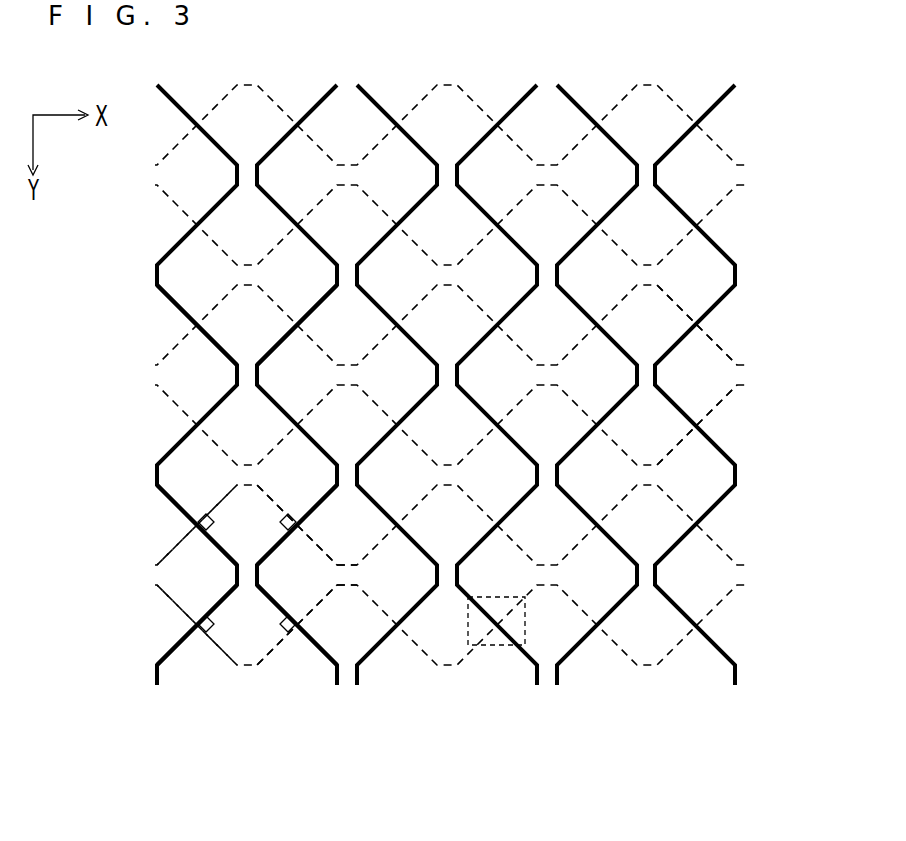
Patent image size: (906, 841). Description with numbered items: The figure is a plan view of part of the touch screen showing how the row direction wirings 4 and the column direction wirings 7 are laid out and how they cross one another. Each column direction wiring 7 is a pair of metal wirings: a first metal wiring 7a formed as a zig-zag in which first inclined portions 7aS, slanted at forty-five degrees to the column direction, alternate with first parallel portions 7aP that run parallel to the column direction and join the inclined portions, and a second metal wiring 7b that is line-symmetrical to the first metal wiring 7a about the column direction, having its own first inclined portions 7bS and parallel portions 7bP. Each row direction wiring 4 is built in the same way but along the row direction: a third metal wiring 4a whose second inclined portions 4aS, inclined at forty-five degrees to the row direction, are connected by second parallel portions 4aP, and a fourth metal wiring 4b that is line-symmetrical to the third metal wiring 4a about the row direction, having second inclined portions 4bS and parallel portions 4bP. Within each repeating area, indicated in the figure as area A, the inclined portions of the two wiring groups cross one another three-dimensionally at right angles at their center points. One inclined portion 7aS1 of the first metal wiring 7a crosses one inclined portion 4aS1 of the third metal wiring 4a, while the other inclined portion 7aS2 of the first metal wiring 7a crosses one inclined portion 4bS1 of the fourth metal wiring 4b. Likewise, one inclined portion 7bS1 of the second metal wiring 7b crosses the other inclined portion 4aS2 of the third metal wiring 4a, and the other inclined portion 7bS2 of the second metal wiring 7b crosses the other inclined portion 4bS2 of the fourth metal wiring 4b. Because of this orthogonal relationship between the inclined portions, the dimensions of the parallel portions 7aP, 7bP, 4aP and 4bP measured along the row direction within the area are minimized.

The row direction wirings 4 is at (418, 375).
The third metal wiring 4a is at (178, 547).
The fourth metal wiring 4b is at (113, 522).
The second inclined portions 4aS is at (722, 337).
The second inclined portions 4bS is at (722, 405).
The one inclined portion 4aS1 is at (166, 457).
The other inclined portion 4aS2 is at (297, 541).
The one inclined portion 4bS1 is at (197, 638).
The other inclined portion 4bS2 is at (290, 643).
The second parallel portions 4aP is at (379, 560).
The parallel portions 4bP is at (379, 587).
The column direction wirings 7 is at (446, 442).
The first metal wiring 7a is at (163, 666).
The second metal wiring 7b is at (320, 650).
The first inclined portions 7aS is at (180, 306).
The first inclined portions 7bS is at (314, 305).
The one inclined portion 7aS1 is at (186, 502).
The other inclined portion 7aS2 is at (167, 655).
The one inclined portion 7bS1 is at (330, 492).
The other inclined portion 7bS2 is at (331, 660).
The first parallel portions 7aP is at (357, 471).
The parallel portions 7bP is at (337, 473).
The enlarged region A is at (492, 645).